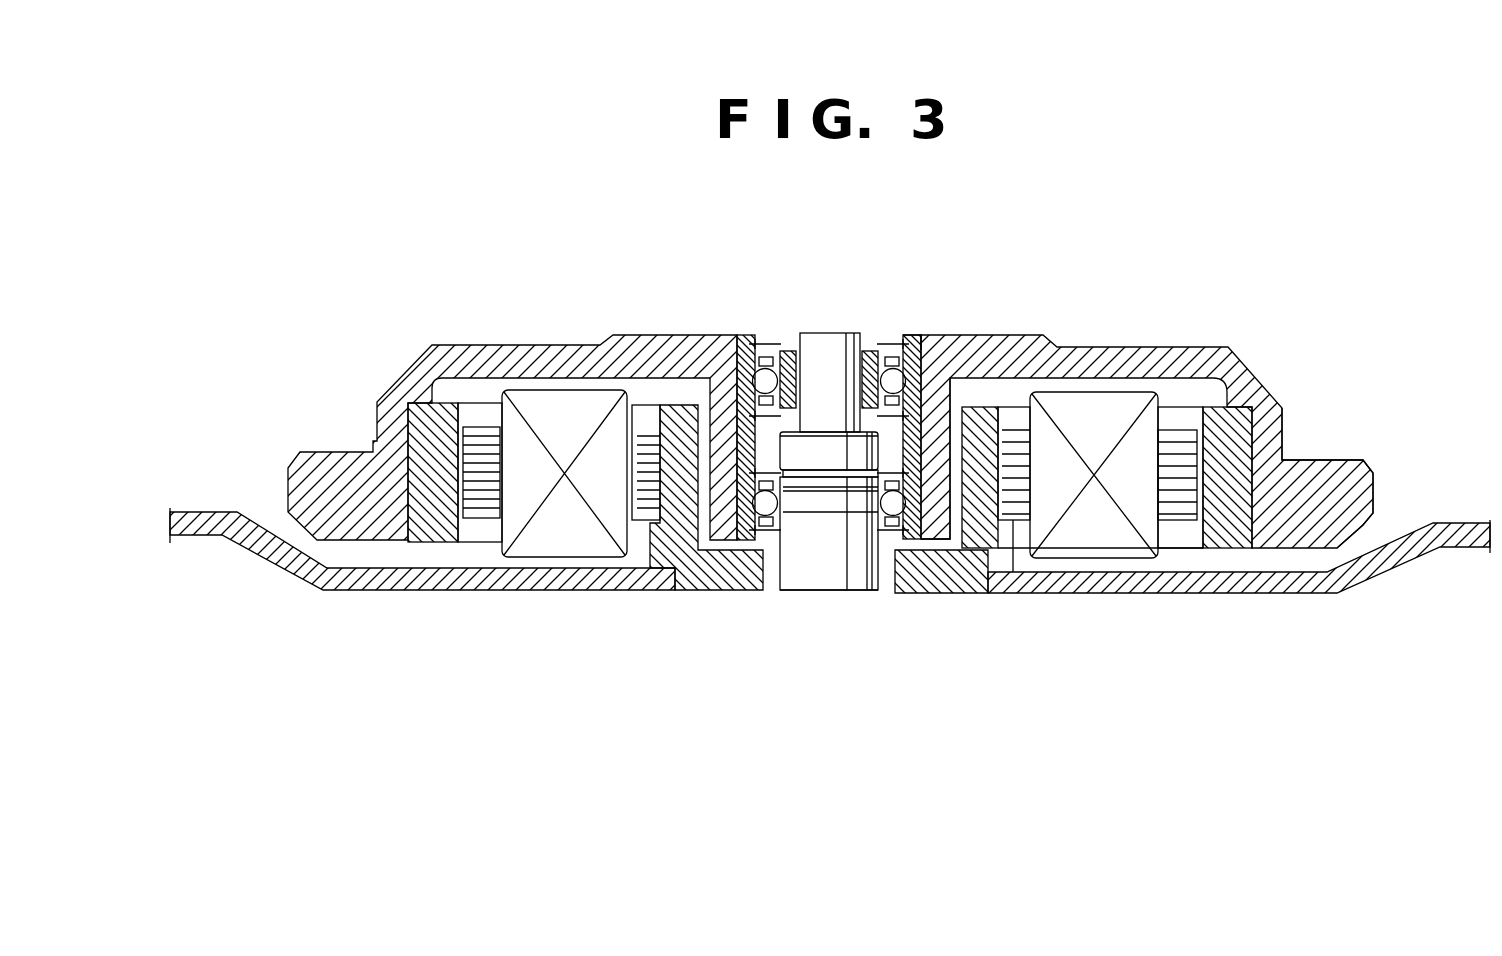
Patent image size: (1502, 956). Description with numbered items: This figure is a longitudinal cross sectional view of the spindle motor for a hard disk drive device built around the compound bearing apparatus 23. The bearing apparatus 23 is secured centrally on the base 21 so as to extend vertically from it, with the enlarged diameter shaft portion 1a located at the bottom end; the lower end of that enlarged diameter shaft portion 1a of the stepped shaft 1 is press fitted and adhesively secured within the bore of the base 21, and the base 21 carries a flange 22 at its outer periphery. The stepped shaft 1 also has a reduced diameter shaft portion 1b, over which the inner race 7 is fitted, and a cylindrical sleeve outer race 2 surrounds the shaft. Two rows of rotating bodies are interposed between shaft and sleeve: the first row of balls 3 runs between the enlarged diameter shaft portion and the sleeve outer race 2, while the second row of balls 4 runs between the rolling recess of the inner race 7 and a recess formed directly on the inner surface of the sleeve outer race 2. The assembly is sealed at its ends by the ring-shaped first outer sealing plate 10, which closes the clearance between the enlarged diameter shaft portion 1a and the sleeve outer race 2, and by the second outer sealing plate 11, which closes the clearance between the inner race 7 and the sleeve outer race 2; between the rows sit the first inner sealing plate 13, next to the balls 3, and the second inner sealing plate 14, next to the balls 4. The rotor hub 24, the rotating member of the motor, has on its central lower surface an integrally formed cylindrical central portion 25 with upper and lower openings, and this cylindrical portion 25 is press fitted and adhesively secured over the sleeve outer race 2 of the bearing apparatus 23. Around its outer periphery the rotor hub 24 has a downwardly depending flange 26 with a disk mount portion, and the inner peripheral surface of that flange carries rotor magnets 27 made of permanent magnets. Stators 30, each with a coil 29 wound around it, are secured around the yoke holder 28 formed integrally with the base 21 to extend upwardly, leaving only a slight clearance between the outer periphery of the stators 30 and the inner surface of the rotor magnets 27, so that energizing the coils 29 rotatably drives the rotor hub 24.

The stepped shaft 1 is at (848, 316).
The enlarged diameter shaft portion 1a is at (836, 578).
The reduced diameter shaft portion 1b is at (829, 333).
The sleeve outer race 2 is at (745, 340).
The balls 3 is at (893, 512).
The balls 4 is at (923, 360).
The inner race 7 is at (867, 357).
The first outer sealing plate 10 is at (765, 533).
The second outer sealing plate 11 is at (766, 369).
The first inner sealing plate 13 is at (785, 457).
The second inner sealing plate 14 is at (768, 422).
The base 21 is at (962, 580).
The flange 22 is at (1407, 558).
The compound bearing apparatus 23 is at (922, 322).
The rotor hub 24 is at (1150, 353).
The cylindrical central portion 25 is at (950, 445).
The downwardly depending flange 26 is at (1282, 437).
The rotor magnets 27 is at (427, 528).
The yoke holder 28 is at (674, 410).
The coil 29 is at (540, 405).
The stators 30 is at (484, 432).